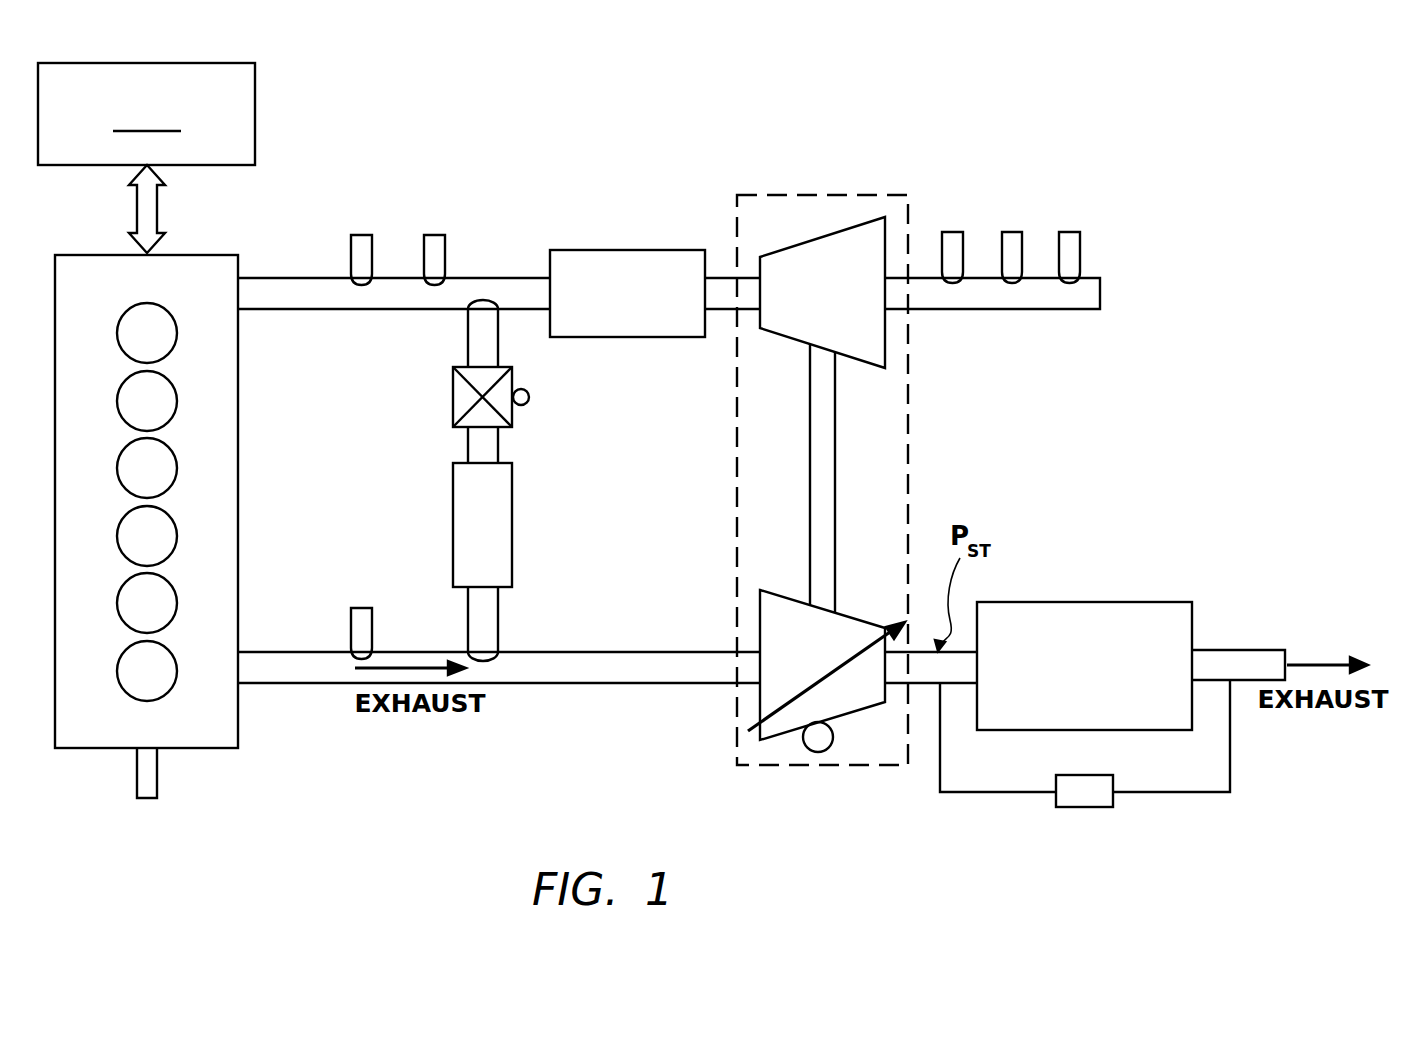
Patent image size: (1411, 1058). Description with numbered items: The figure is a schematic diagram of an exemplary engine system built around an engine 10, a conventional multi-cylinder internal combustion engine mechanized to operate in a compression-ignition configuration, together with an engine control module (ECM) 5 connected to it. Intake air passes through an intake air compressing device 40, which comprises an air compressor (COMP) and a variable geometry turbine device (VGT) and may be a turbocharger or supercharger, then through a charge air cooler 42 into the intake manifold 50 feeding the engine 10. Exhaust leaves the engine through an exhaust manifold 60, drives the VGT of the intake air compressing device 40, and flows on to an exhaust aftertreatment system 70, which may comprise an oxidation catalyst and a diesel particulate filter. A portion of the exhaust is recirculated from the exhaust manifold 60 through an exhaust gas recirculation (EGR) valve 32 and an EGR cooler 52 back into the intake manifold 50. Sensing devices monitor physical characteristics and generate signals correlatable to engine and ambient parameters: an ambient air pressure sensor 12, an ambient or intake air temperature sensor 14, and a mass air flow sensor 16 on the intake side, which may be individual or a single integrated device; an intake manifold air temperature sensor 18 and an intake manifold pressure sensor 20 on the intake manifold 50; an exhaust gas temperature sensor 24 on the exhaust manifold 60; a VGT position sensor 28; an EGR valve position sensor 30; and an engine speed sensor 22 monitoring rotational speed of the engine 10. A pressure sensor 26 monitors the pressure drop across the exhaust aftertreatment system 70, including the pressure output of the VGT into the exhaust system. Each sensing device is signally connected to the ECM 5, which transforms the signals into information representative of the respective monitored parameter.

The engine control module 5 is at (243, 118).
The engine 10 is at (240, 262).
The ambient air pressure sensor 12 is at (1072, 240).
The ambient or intake air temperature sensor 14 is at (1015, 240).
The mass air flow sensor 16 is at (955, 240).
The intake manifold air temperature sensor 18 is at (437, 247).
The intake manifold pressure sensor 20 is at (365, 247).
The engine speed sensor 22 is at (151, 777).
The exhaust gas temperature sensor 24 is at (360, 608).
The pressure sensor 26 is at (1080, 797).
The VGT position sensor 28 is at (818, 740).
The EGR valve position sensor 30 is at (530, 397).
The exhaust gas recirculation valve 32 is at (460, 410).
The intake air compressing device 40 is at (810, 195).
The charge air cooler 42 is at (630, 260).
The intake manifold 50 is at (287, 300).
The EGR cooler 52 is at (500, 520).
The exhaust manifold 60 is at (550, 672).
The exhaust aftertreatment system 70 is at (1135, 608).